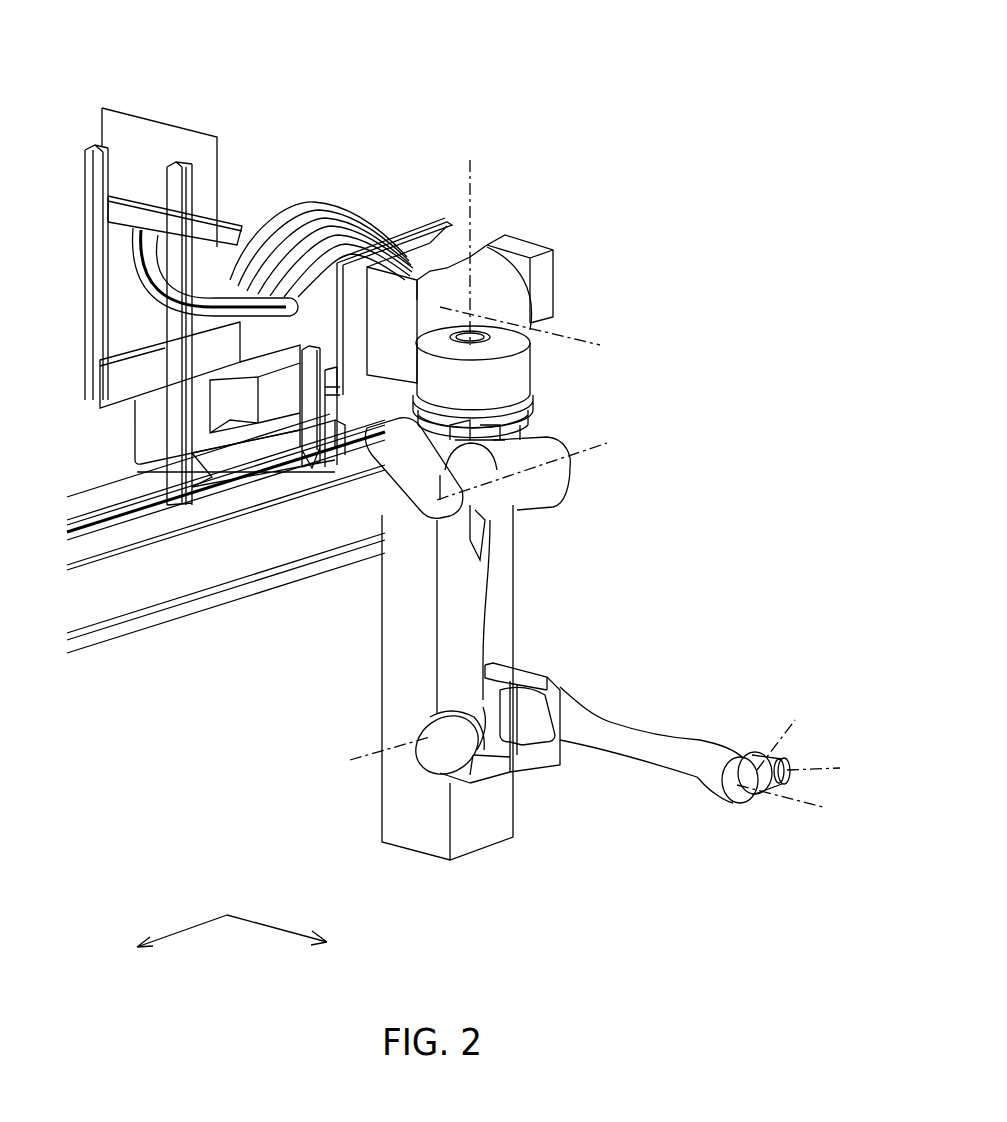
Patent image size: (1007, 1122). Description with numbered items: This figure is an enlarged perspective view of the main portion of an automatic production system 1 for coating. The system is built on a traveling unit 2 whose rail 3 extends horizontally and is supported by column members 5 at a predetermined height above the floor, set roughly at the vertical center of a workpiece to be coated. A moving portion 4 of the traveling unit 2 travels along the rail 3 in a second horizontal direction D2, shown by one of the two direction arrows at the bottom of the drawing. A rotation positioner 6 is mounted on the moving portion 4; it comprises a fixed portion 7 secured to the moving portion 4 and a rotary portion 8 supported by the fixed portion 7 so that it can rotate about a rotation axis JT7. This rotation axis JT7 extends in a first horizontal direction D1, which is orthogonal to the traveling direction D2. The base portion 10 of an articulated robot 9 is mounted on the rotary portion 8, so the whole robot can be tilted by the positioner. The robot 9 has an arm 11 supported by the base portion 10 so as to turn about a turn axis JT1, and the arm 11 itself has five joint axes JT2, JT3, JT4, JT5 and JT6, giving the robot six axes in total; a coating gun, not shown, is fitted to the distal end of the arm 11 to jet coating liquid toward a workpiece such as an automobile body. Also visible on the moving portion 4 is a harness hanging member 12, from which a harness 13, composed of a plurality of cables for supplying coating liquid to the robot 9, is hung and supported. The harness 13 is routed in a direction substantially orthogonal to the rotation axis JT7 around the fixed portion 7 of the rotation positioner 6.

The automatic production system 1 is at (649, 57).
The traveling unit 2 is at (190, 692).
The rail 3 is at (92, 552).
The moving portion 4 is at (250, 425).
The column member 5 is at (397, 637).
The rotation positioner 6 is at (318, 97).
The fixed portion 7 is at (318, 323).
The rotary portion 8 is at (395, 250).
The articulated robot 9 is at (681, 608).
The base portion 10 is at (517, 367).
The arm 11 is at (647, 733).
The harness hanging member 12 is at (142, 127).
The harness 13 is at (152, 252).
The turn axis JT1 is at (470, 197).
The joint axis JT2 is at (592, 450).
The joint axis JT3 is at (368, 766).
The joint axis JT4 is at (792, 800).
The joint axis JT5 is at (785, 732).
The joint axis JT6 is at (827, 765).
The rotation axis JT7 is at (580, 342).
The first horizontal direction D1 is at (267, 923).
The second horizontal direction D2 is at (192, 925).